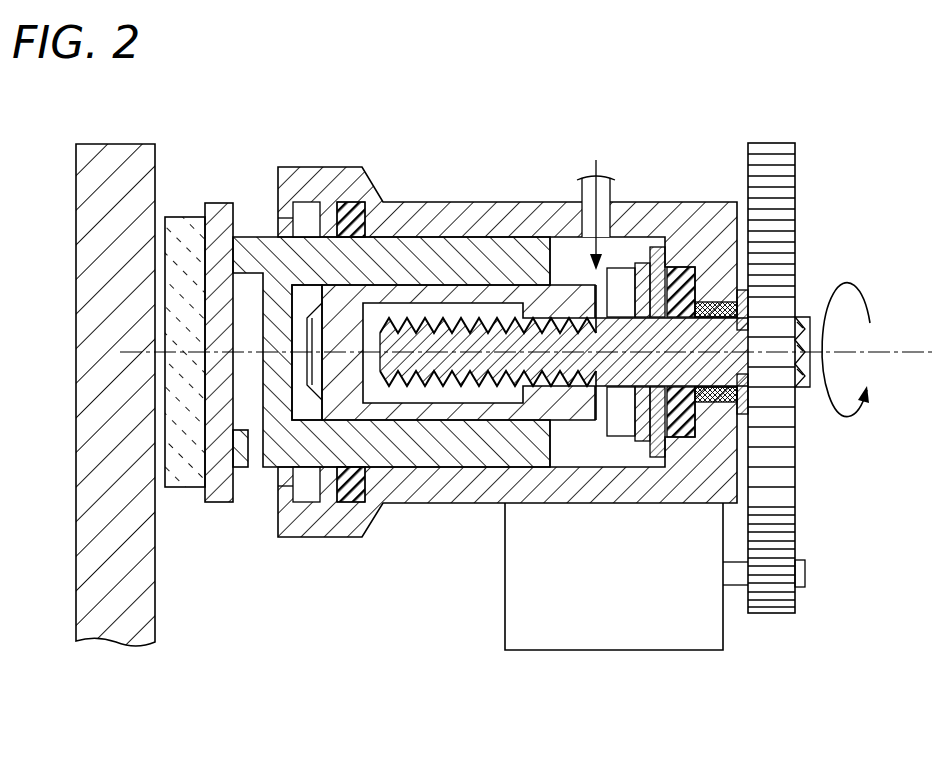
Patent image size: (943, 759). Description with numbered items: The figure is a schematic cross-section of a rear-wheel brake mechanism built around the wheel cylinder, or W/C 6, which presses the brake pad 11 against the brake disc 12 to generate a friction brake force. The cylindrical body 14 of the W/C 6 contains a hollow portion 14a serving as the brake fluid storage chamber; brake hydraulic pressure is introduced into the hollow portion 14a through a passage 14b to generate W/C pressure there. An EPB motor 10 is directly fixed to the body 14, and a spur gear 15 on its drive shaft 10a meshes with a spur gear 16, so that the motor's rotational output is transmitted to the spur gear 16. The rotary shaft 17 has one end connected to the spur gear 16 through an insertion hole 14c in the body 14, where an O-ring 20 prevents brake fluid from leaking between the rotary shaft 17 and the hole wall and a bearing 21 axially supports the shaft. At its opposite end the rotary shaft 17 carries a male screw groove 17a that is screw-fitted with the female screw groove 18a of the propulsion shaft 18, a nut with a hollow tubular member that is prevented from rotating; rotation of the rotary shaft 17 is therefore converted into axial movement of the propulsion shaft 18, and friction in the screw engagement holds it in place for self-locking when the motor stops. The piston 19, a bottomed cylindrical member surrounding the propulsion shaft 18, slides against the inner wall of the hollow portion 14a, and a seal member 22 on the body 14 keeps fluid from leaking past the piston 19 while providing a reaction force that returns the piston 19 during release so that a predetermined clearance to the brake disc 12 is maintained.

The W/C 6 is at (478, 183).
The EPB motor 10 is at (580, 652).
The drive shaft 10a is at (737, 580).
The brake pad 11 is at (184, 490).
The brake disc 12 is at (76, 470).
The body 14 is at (517, 200).
The hollow portion 14a is at (567, 250).
The passage 14b is at (604, 213).
The insertion hole 14c is at (735, 338).
The spur gear 15 is at (796, 598).
The spur gear 16 is at (797, 186).
The rotary shaft 17 is at (752, 335).
The male screw groove 17a is at (490, 382).
The propulsion shaft 18 is at (430, 410).
The female screw groove 18a is at (556, 392).
The piston 19 is at (391, 454).
The O-ring 20 is at (683, 442).
The bearing 21 is at (701, 404).
The seal member 22 is at (356, 496).